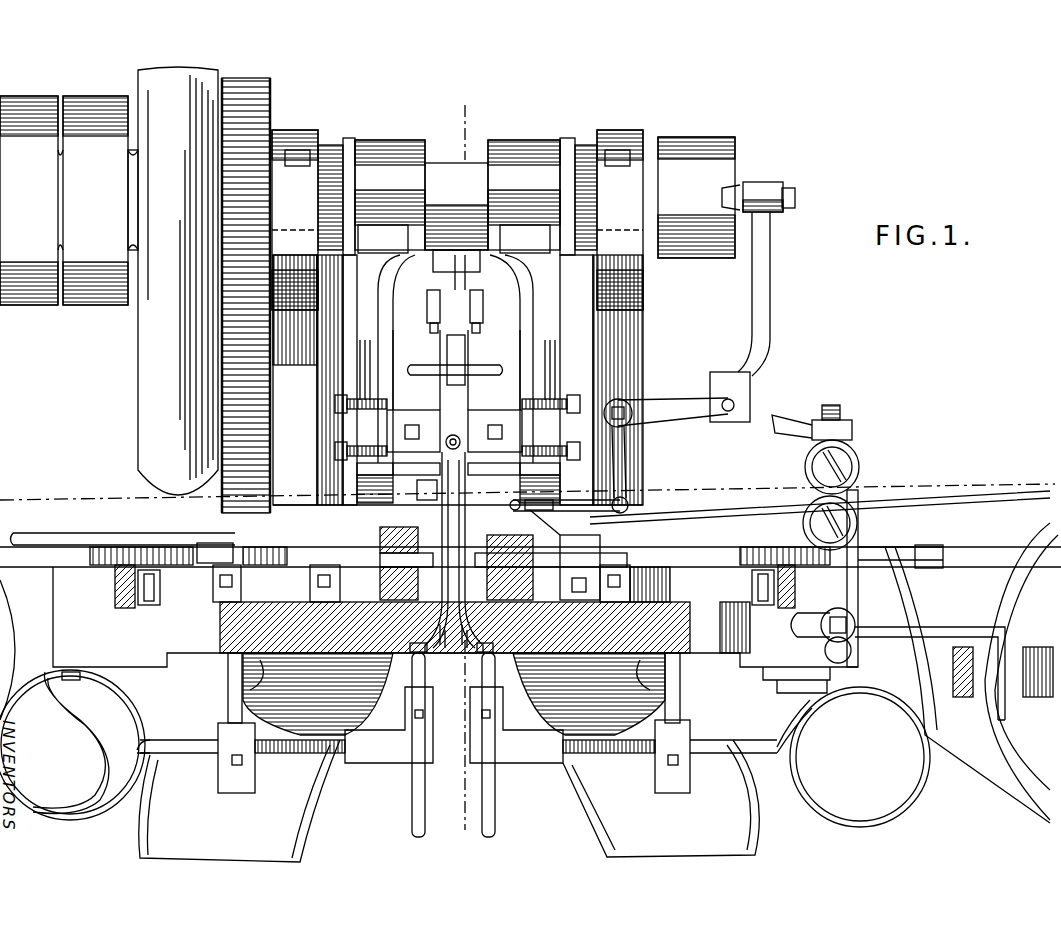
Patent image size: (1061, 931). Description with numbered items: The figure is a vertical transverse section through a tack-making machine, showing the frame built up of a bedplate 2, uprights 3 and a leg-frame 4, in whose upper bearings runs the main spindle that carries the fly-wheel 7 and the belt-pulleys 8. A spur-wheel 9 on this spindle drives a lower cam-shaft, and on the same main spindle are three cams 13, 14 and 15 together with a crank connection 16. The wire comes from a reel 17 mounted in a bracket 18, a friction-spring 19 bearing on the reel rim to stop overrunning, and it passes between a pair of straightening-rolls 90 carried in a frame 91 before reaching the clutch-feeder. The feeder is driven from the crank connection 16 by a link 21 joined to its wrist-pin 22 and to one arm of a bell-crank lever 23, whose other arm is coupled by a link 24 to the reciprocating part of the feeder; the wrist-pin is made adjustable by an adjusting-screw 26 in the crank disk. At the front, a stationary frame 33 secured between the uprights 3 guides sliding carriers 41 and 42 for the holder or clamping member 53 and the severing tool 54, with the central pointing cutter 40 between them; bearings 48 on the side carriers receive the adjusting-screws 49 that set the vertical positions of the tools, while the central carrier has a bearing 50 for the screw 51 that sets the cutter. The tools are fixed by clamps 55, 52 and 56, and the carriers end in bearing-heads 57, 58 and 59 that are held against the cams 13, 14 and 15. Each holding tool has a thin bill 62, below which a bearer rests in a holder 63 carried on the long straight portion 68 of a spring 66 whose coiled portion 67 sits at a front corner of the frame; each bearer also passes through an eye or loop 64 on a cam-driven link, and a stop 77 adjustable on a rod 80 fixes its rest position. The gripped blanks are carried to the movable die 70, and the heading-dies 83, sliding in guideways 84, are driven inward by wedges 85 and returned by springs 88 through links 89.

The bedplate 2 is at (462, 470).
The uprights 3 is at (527, 382).
The leg-frame 4 is at (449, 801).
The fly-wheel 7 is at (178, 281).
The belt-pulleys 8 is at (69, 200).
The spur-wheel 9 is at (272, 95).
The cam 13 is at (398, 148).
The cam 14 is at (438, 170).
The cam 15 is at (545, 148).
The crank connection 16 is at (765, 180).
The reel 17 is at (1040, 530).
The bracket 18 is at (990, 672).
The friction-spring 19 is at (975, 625).
The link 21 is at (772, 282).
The wrist-pin 22 is at (797, 198).
The bell-crank lever 23 is at (670, 393).
The link 24 is at (600, 510).
The adjusting-screw 26 is at (519, 517).
The stationary frame 33 is at (442, 421).
The cutter 40 is at (453, 526).
The carrier 41 is at (416, 370).
The carrier 42 is at (494, 370).
The bearings 48 is at (454, 329).
The adjusting-screws 49 is at (533, 300).
The bearing 50 is at (455, 360).
The screw 51 is at (457, 279).
The clamp 52 is at (375, 474).
The holder or clamping member 53 is at (435, 462).
The tool 54 is at (514, 474).
The clamp 55 is at (387, 427).
The clamp 56 is at (524, 427).
The bearing-head 57 is at (383, 239).
The bearing-head 58 is at (456, 262).
The bearing-head 59 is at (525, 239).
The bill 62 is at (432, 509).
The holders 63 is at (455, 745).
The eye or loop 64 is at (370, 672).
The springs 66 is at (140, 720).
The coiled portions 67 is at (75, 815).
The straight portions 68 is at (310, 728).
The movable die 70 is at (451, 616).
The stop 77 is at (262, 773).
The rod 80 is at (236, 680).
The heading-dies 83 is at (460, 559).
The guideways 84 is at (441, 554).
The wedges 85 is at (152, 605).
The springs 88 is at (50, 605).
The links 89 is at (120, 545).
The straightening-rolls 90 is at (812, 487).
The frame 91 is at (852, 438).